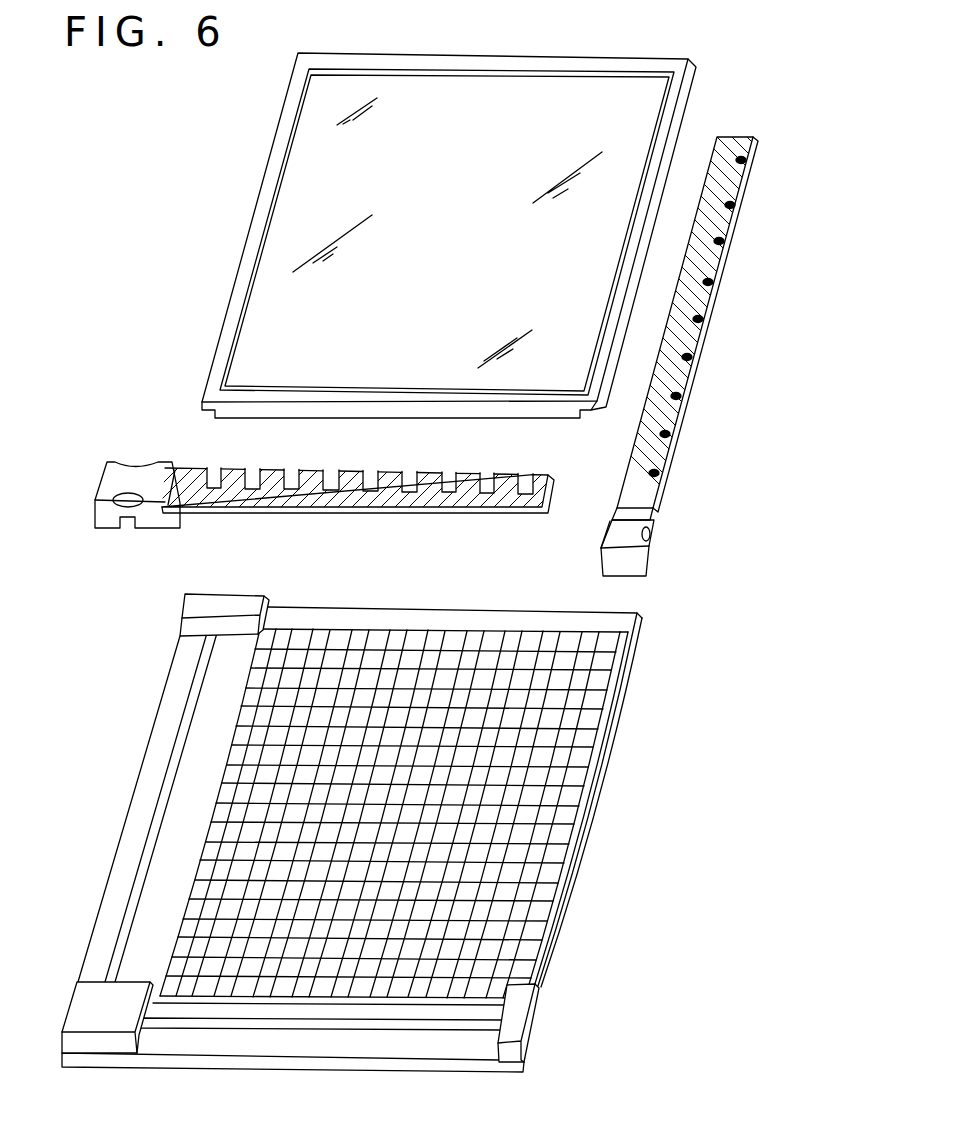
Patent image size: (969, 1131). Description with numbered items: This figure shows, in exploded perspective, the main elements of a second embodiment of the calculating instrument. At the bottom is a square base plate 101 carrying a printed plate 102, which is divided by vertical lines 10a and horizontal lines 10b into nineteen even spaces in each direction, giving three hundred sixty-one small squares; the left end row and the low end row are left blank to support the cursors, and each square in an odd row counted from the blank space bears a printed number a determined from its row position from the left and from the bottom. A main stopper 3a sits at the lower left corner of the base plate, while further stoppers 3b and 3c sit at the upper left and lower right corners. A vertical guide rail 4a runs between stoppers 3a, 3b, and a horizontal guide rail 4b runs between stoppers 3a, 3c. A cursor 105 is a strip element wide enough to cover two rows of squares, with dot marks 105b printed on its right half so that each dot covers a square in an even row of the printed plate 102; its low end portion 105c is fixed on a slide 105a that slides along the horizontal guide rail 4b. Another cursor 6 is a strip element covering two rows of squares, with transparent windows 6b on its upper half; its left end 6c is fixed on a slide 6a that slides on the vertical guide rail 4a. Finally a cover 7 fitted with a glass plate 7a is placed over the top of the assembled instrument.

The cover 7 is at (253, 227).
The glass plate 7a is at (325, 165).
The horizontal cursor 6 is at (363, 483).
The slide 6a is at (123, 470).
The notches 6b is at (373, 478).
The left end of the strip member 6c is at (178, 470).
The cursor 105 is at (637, 357).
The slide 105a is at (634, 561).
The dot marks 105b is at (676, 396).
The low end portion of the strip element 105c is at (651, 515).
The main stopper 3a is at (103, 993).
The stopper 3b is at (192, 605).
The stopper 3c is at (510, 1018).
The guide rail 4a is at (148, 847).
The guide rail 4b is at (460, 1030).
The square base plate 101 is at (170, 725).
The printed plate 102 is at (618, 687).
The vertical lines 10a is at (575, 742).
The horizontal lines 10b is at (590, 650).
The number a is at (530, 837).